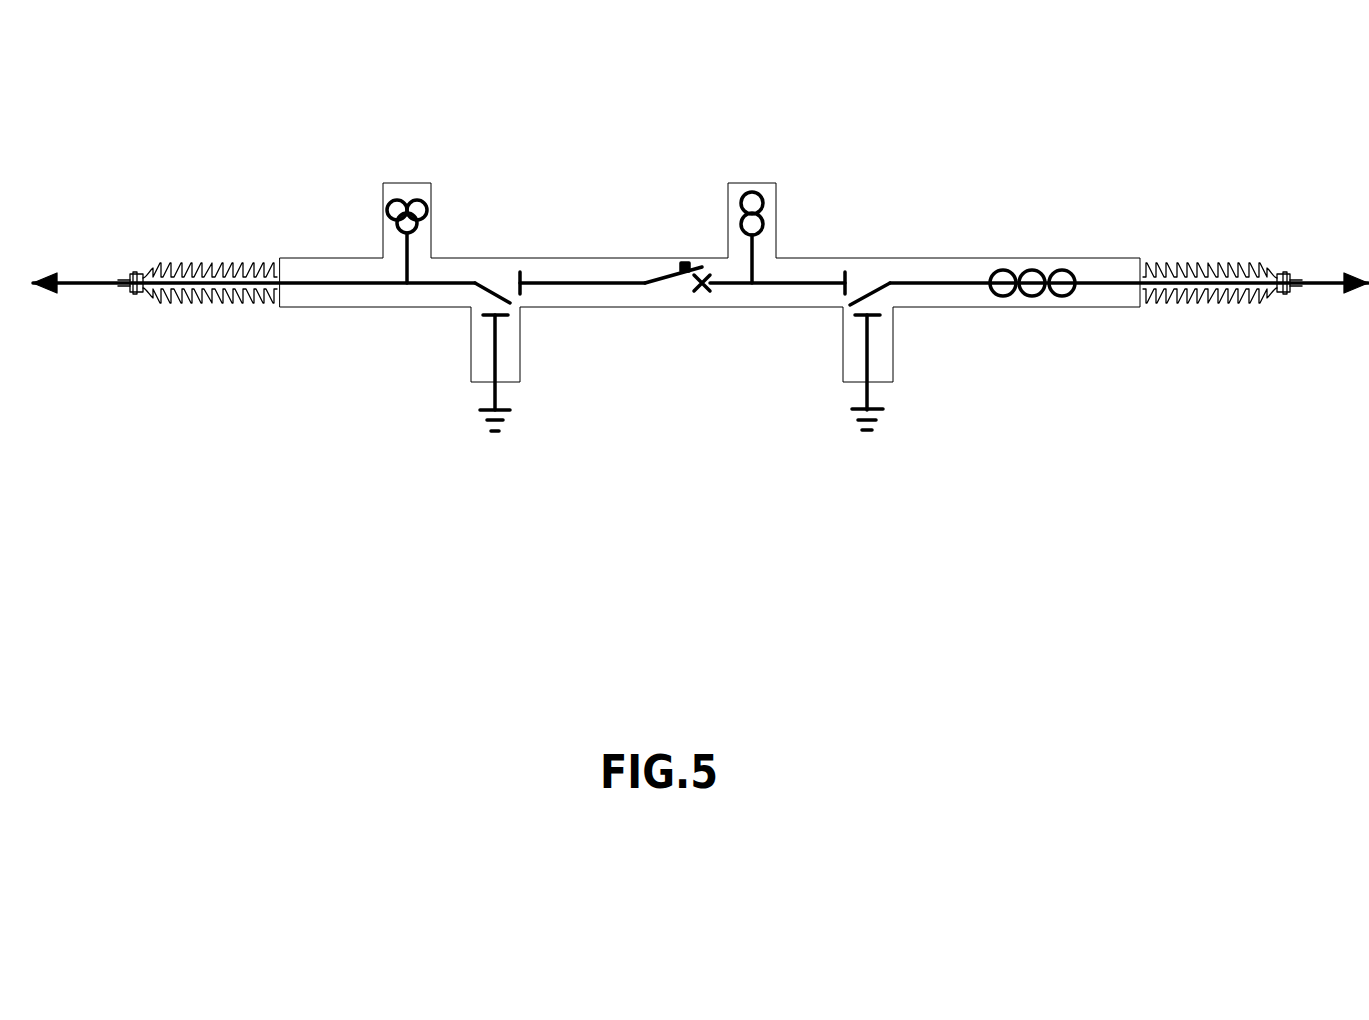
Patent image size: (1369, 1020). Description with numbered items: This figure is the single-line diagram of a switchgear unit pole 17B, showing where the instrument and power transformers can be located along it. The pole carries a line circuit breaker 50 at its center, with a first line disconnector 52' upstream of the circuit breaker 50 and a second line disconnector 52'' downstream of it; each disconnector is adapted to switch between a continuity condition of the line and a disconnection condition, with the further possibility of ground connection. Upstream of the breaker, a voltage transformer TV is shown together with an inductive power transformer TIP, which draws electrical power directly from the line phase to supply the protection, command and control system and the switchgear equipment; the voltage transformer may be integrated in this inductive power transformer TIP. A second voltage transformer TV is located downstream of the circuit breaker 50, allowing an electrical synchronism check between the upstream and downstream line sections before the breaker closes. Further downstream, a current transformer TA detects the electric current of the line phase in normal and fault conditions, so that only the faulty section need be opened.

The switchgear unit pole 17B is at (1014, 394).
The voltage transformer TV is at (405, 200).
The inductive power transformer TIP is at (430, 204).
The first line disconnector 52' is at (545, 291).
The circuit breaker 50 is at (670, 285).
The second line disconnector 52'' is at (917, 291).
The current transformer TA is at (1042, 270).